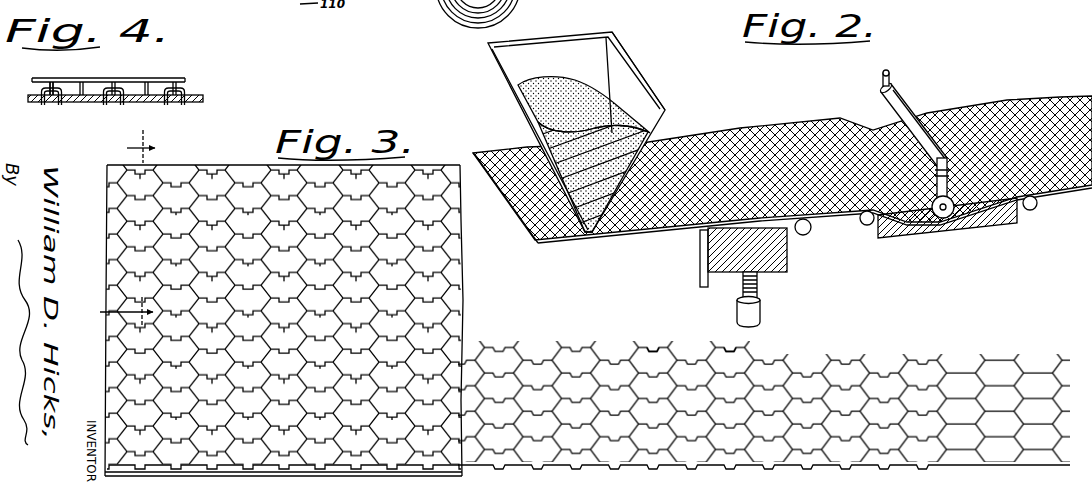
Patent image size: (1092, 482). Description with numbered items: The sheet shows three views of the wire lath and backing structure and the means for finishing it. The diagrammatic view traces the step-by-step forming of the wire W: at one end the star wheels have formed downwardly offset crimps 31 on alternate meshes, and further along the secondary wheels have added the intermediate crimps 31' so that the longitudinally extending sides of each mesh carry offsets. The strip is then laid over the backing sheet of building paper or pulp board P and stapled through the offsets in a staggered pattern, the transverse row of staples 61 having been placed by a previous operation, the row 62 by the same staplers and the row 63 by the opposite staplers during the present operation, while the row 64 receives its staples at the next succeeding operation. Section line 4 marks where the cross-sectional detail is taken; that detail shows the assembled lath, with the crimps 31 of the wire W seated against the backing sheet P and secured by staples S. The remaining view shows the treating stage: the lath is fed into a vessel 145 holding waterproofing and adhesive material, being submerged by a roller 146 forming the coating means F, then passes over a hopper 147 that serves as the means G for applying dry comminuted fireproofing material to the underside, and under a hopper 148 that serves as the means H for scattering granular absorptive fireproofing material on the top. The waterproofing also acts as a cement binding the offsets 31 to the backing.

In FIG. 4, the crimps or offsets 31 is at (98, 74).
In FIG. 2, the crimps or offsets 31 is at (764, 396).
In FIG. 2, the crimps or offsets 31' is at (622, 331).
In FIG. 3, the transverse row of staples 61 is at (288, 325).
In FIG. 3, the transverse row of staples 62 is at (357, 325).
In FIG. 3, the transverse row of staples 63 is at (250, 311).
In FIG. 3, the transverse row of staples 64 is at (323, 311).
In FIG. 2, the vessel 145 is at (984, 230).
In FIG. 2, the roller 146 is at (885, 124).
In FIG. 2, the hopper 147 is at (706, 285).
In FIG. 2, the hopper 148 is at (660, 108).
In FIG. 2, the means for applying bonding material H is at (604, 132).
In FIG. 2, the means for coating the strip F is at (889, 140).
In FIG. 4, the wire W is at (185, 79).
In FIG. 2, the wire W is at (1018, 101).
In FIG. 4, the backing sheet P is at (201, 96).
In FIG. 3, the backing sheet P is at (464, 268).
In FIG. 2, the backing sheet P is at (1073, 190).
In FIG. 2, the means for applying pulverulent material G is at (797, 241).
In FIG. 4, the clip S is at (107, 102).
In FIG. 3, the section line 4- 4 is at (127, 222).